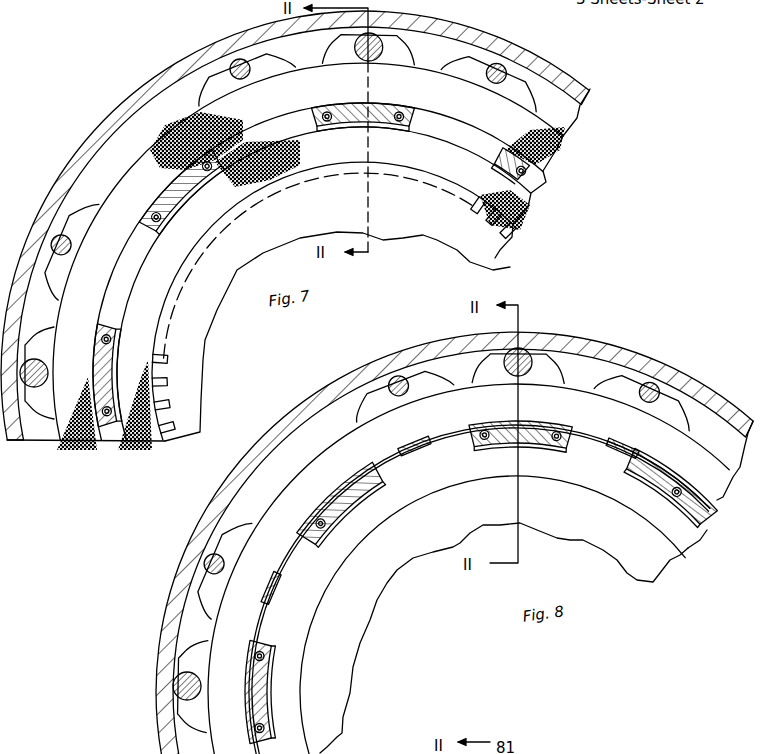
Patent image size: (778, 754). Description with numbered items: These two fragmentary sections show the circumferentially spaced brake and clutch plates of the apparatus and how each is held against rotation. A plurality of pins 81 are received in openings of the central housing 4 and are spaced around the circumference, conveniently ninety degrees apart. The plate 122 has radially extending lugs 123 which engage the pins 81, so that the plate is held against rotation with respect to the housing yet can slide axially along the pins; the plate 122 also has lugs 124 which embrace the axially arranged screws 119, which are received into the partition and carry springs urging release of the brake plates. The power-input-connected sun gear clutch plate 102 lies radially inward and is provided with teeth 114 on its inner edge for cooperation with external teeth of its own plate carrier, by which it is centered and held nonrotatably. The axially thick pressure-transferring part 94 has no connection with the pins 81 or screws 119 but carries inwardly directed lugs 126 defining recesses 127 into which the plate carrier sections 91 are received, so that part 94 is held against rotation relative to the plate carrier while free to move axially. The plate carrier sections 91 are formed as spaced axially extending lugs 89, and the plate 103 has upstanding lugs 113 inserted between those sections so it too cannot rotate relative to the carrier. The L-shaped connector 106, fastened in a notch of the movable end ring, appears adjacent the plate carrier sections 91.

In FIG. 7, the central housing 4 is at (468, 26).
In FIG. 7, the pins 81 is at (383, 38).
In FIG. 8, the pins 81 is at (524, 350).
In FIG. 8, the axially extending lugs 89 is at (551, 425).
In FIG. 8, the plate carrier sections 91 is at (370, 465).
In FIG. 8, the pressure-transferring part 94 is at (712, 466).
In FIG. 7, the sun gear clutch plate 102 is at (540, 214).
In FIG. 8, the plate 103 is at (684, 536).
In FIG. 8, the connector 106 is at (418, 456).
In FIG. 8, the upstanding lugs 113 is at (597, 458).
In FIG. 7, the teeth 114 is at (510, 267).
In FIG. 7, the screws 119 is at (512, 74).
In FIG. 8, the screws 119 is at (400, 376).
In FIG. 7, the plate 122 is at (566, 140).
In FIG. 7, the radially extending lugs 123 is at (396, 52).
In FIG. 8, the radially extending lugs 123 is at (556, 368).
In FIG. 7, the lugs 124 is at (270, 64).
In FIG. 8, the lugs 124 is at (428, 379).
In FIG. 8, the inwardly directed lugs 126 is at (645, 456).
In FIG. 8, the recesses 127 is at (498, 424).